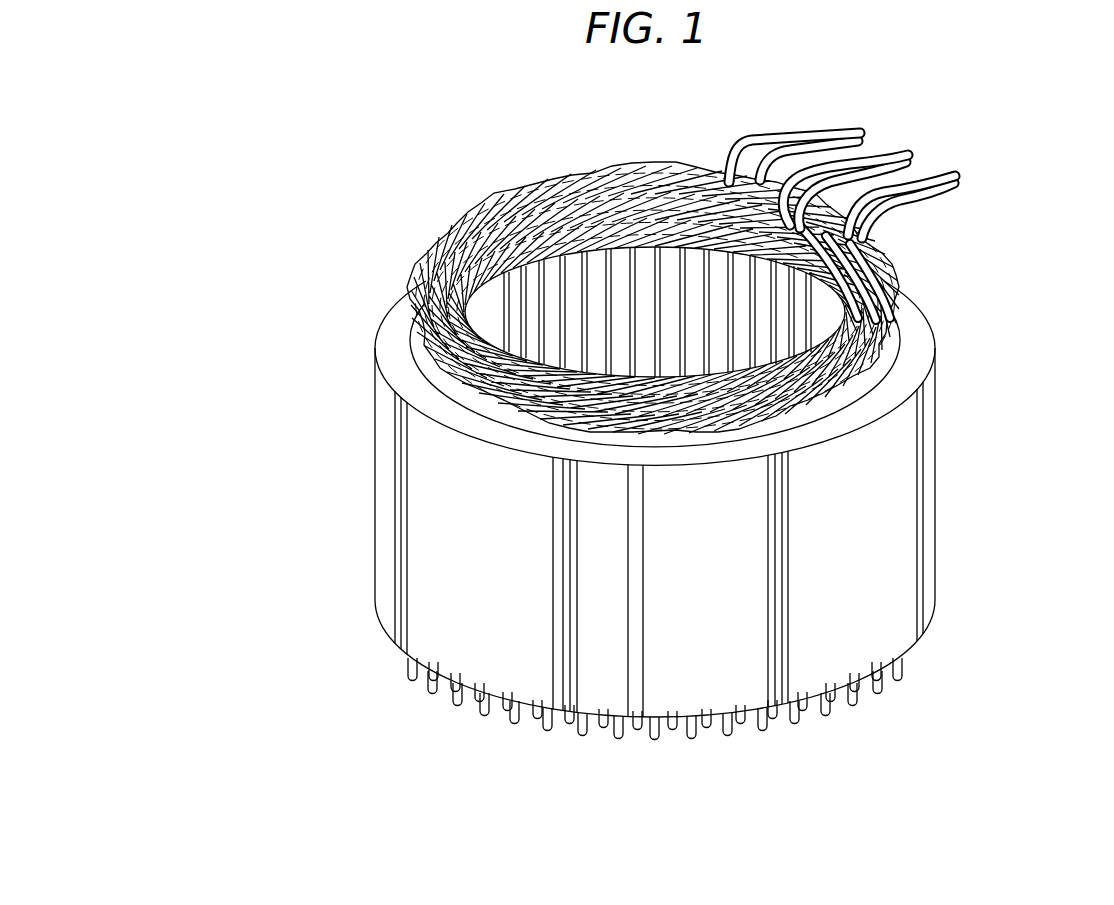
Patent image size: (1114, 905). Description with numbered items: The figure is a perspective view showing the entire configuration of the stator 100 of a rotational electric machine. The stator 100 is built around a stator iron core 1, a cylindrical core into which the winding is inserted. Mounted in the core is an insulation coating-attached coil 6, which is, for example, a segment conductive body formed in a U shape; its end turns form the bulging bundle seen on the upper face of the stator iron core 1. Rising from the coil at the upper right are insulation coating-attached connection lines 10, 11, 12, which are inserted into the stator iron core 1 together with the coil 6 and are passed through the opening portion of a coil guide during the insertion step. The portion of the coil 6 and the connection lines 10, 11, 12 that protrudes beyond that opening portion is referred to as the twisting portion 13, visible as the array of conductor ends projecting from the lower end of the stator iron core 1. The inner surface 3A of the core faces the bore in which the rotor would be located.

The stator 100 is at (325, 153).
The stator iron core 1 is at (883, 500).
The inner peripheral surface of stator core (teeth) 3A is at (896, 338).
The insulation coating-attached coil 6 is at (497, 202).
The insulation coating-attached connection line 10 is at (843, 130).
The insulation coating-attached connection line 11 is at (902, 150).
The insulation coating-attached connection line 12 is at (956, 176).
The twisting portion 13 is at (610, 757).